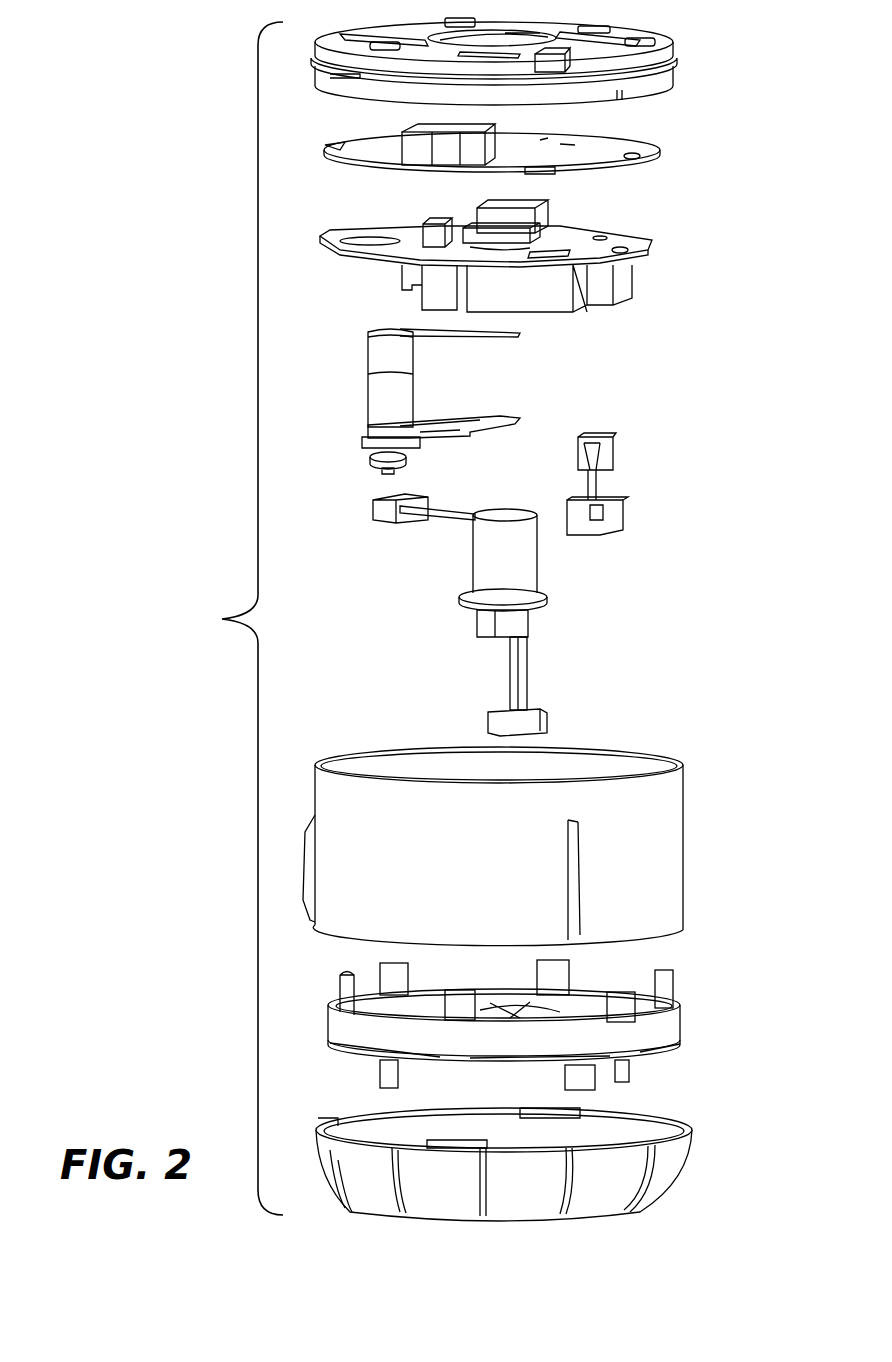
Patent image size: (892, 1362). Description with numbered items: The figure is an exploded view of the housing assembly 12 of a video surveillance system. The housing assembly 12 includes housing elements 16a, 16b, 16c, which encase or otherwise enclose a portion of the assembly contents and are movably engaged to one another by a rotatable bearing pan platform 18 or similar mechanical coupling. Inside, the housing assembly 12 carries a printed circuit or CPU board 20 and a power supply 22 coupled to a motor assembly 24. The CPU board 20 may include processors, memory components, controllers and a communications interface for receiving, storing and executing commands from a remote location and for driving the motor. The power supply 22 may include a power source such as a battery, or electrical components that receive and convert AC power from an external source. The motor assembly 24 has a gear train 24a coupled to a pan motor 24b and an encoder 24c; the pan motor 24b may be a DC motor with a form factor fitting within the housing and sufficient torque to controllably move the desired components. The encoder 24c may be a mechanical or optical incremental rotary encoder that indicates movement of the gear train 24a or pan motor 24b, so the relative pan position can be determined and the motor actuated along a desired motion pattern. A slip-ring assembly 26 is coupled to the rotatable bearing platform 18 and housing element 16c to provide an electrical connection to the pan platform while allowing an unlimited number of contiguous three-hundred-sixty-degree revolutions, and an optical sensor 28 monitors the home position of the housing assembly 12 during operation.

The housing assembly 12 is at (235, 618).
The housing element 16a is at (665, 58).
The housing element 16b is at (660, 835).
The housing element 16c is at (690, 1160).
The rotatable bearing pan platform 18 is at (665, 1025).
The CPU board 20 is at (620, 150).
The power supply 22 is at (625, 280).
The motor assembly 24 is at (485, 403).
The gear train 24a is at (400, 460).
The pan motor 24b is at (405, 385).
The encoder 24c is at (520, 333).
The slip-ring assembly 26 is at (520, 565).
The optical sensor 28 is at (620, 505).